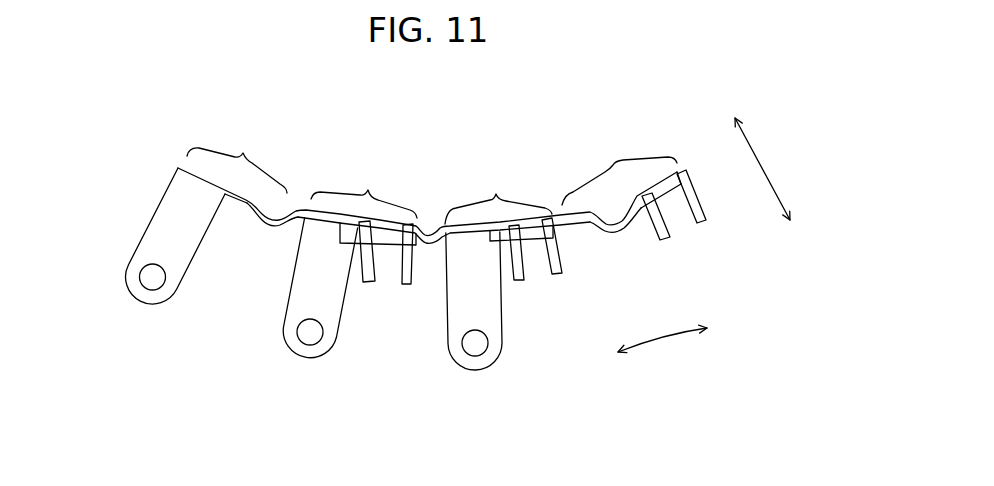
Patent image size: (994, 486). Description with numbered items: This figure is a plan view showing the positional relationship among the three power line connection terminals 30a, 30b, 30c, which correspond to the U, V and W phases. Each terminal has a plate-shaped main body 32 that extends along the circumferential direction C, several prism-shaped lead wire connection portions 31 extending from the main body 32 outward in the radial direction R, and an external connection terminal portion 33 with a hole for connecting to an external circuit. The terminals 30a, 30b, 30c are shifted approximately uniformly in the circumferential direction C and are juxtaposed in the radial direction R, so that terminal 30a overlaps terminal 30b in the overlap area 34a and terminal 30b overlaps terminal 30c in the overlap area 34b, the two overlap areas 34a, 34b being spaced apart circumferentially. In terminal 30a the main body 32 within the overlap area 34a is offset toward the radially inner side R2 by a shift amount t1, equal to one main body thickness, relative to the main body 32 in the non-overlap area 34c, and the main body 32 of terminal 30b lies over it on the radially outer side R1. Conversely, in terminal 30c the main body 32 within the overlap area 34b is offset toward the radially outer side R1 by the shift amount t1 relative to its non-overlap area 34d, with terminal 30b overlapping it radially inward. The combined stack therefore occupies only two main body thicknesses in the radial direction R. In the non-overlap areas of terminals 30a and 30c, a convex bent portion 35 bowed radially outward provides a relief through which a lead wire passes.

The power line connection terminal 30a is at (150, 320).
The power line connection terminal 30b is at (307, 368).
The power line connection terminal 30c is at (512, 362).
The lead wire connection portion 31 is at (407, 285).
The main body 32 is at (303, 212).
The external connection terminal portion 33 is at (130, 290).
The overlap area 34a is at (364, 206).
The overlap area 34b is at (499, 206).
The non-overlap area 34c is at (237, 161).
The non-overlap area 34d is at (621, 173).
The convex bent portion 35 is at (262, 238).
The shift amount t1 is at (260, 184).
The radial direction R is at (762, 169).
The radially outer side R1 is at (797, 240).
The radially inner side R2 is at (720, 105).
The circumferential direction C is at (662, 349).